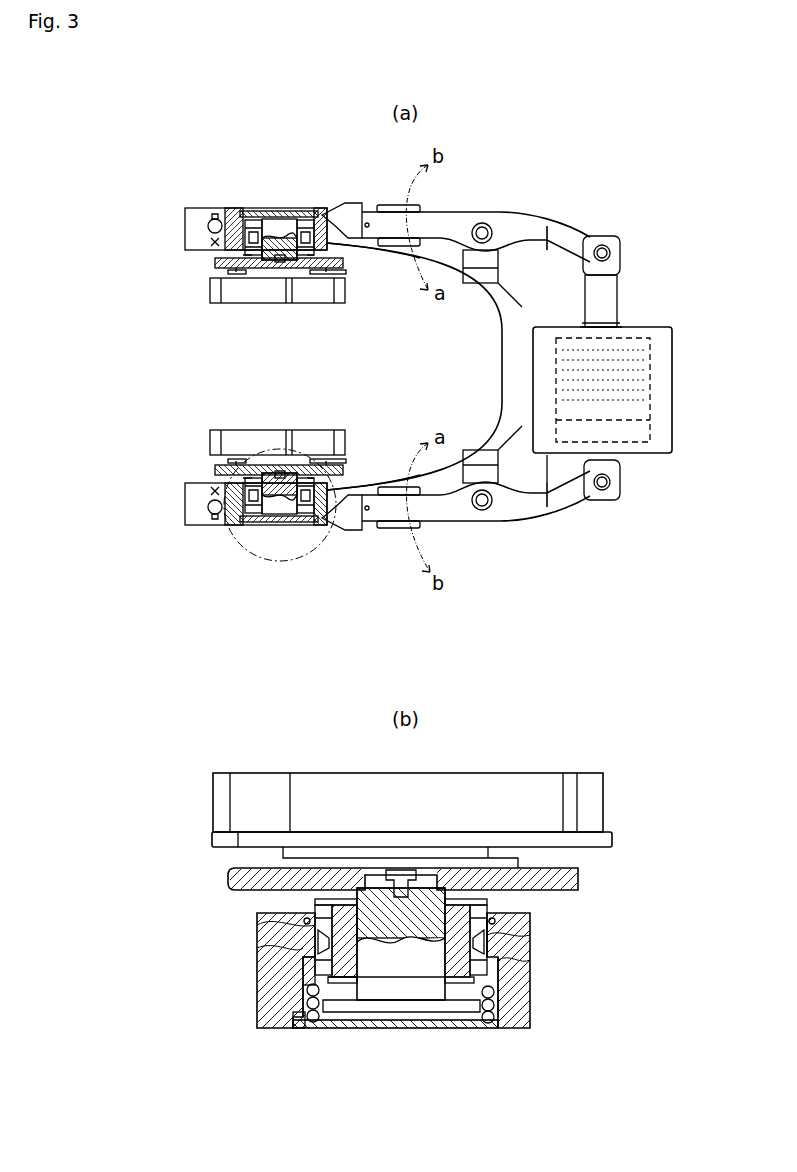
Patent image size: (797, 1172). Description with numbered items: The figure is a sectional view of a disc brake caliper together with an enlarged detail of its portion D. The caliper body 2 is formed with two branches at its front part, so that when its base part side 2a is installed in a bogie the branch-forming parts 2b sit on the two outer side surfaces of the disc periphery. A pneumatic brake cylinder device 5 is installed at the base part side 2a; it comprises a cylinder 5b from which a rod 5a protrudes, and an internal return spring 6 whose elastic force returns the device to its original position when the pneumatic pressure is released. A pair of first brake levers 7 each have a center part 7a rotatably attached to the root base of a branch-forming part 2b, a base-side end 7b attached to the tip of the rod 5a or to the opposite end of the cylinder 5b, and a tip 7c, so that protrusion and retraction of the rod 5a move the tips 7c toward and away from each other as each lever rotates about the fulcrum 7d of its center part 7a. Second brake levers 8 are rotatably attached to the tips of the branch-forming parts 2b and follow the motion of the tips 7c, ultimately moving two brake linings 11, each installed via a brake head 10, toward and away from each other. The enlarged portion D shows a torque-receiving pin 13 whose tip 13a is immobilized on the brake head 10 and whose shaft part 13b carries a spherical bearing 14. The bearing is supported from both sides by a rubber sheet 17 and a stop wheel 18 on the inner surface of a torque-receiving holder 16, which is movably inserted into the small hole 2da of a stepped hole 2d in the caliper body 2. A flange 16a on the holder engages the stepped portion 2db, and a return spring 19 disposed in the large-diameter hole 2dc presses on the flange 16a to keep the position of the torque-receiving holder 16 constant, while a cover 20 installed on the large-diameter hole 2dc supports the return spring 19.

The caliper body 2 is at (500, 318).
The base part side 2a is at (555, 468).
The branch-forming part 2b is at (369, 247).
The stepped hole 2d is at (498, 960).
The small hole 2da is at (492, 932).
The stepped portion 2db is at (305, 962).
The large-diameter hole 2dc is at (292, 1020).
The pneumatic brake cylinder device 5 is at (674, 381).
The rod 5a is at (606, 298).
The cylinder 5b is at (665, 410).
The return spring 6 is at (650, 358).
The first brake lever 7 is at (524, 218).
The center part 7a is at (482, 223).
The base-side end 7b is at (578, 238).
The tip 7c is at (395, 207).
The fulcrum 7d is at (481, 258).
The second brake lever 8 is at (341, 212).
The brake head 10 is at (226, 262).
The brake lining 11 is at (284, 300).
The torque-receiving pin 13 is at (280, 235).
The tip 13a is at (395, 870).
The shaft part 13b is at (340, 945).
The spherical bearing 14 is at (258, 270).
The torque-receiving holder 16 is at (245, 236).
The flange 16a is at (500, 1012).
The rubber sheet 17 is at (330, 901).
The stop wheel 18 is at (300, 995).
The return spring 19 is at (264, 215).
The cover 20 is at (310, 1026).
The portion D is at (273, 562).